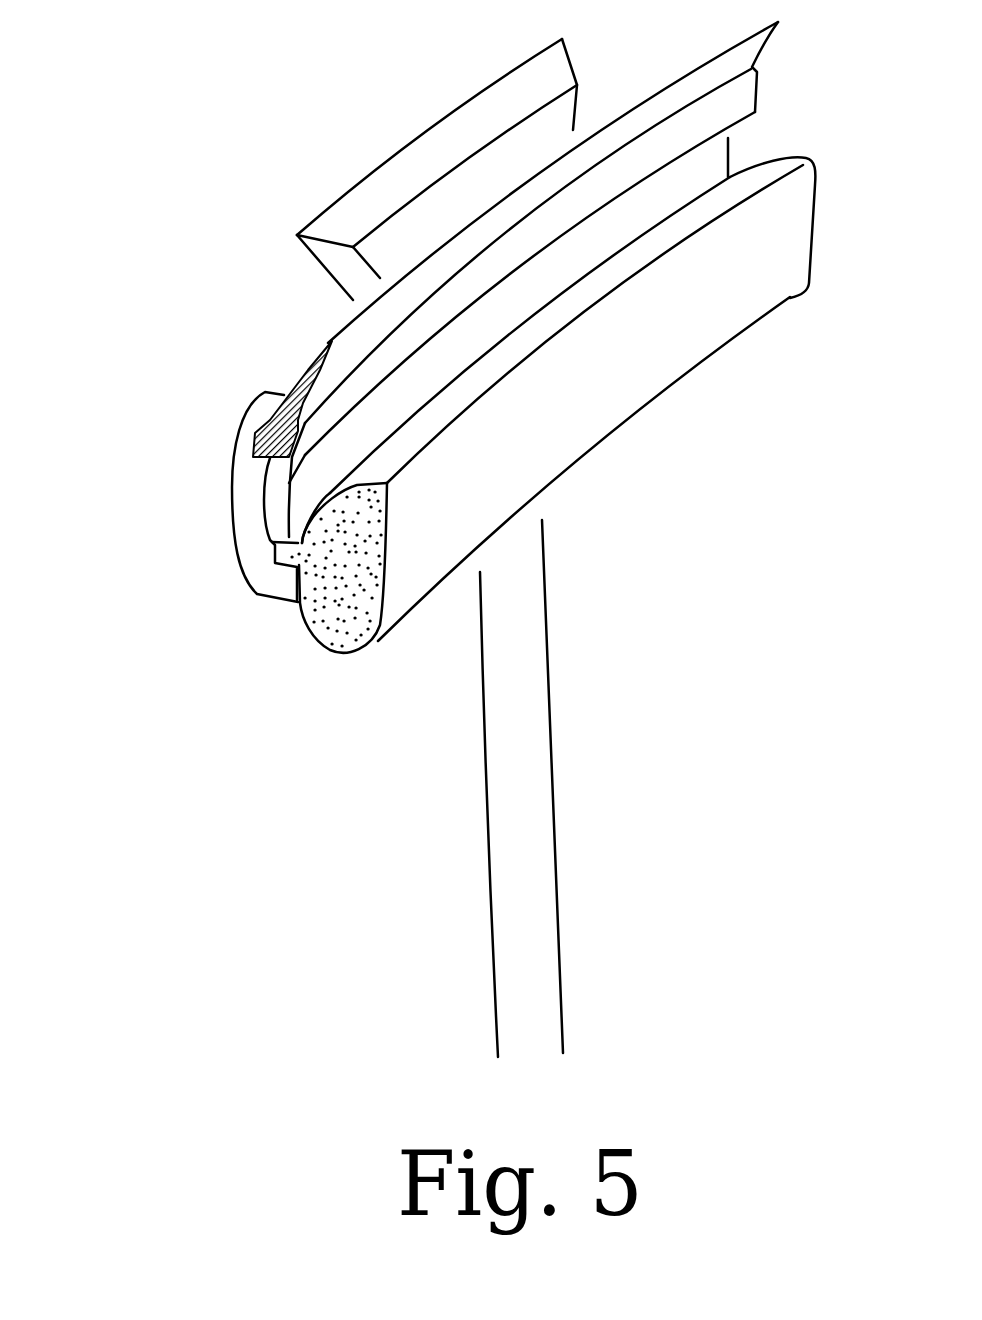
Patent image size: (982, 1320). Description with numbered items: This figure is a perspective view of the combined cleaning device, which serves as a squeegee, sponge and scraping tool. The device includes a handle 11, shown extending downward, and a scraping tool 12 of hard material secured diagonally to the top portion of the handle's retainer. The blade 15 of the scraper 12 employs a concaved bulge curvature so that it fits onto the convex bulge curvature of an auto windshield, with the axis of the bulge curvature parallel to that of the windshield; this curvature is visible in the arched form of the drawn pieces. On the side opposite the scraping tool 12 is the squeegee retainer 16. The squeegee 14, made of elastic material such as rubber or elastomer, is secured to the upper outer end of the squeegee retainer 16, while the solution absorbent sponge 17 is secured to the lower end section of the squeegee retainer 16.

The handle 11 is at (512, 832).
The scraping tool 12 is at (398, 226).
The squeegee 14 is at (284, 402).
The blade 15 is at (425, 136).
The squeegee retainer 16 is at (250, 526).
The solution absorbent sponge 17 is at (343, 617).